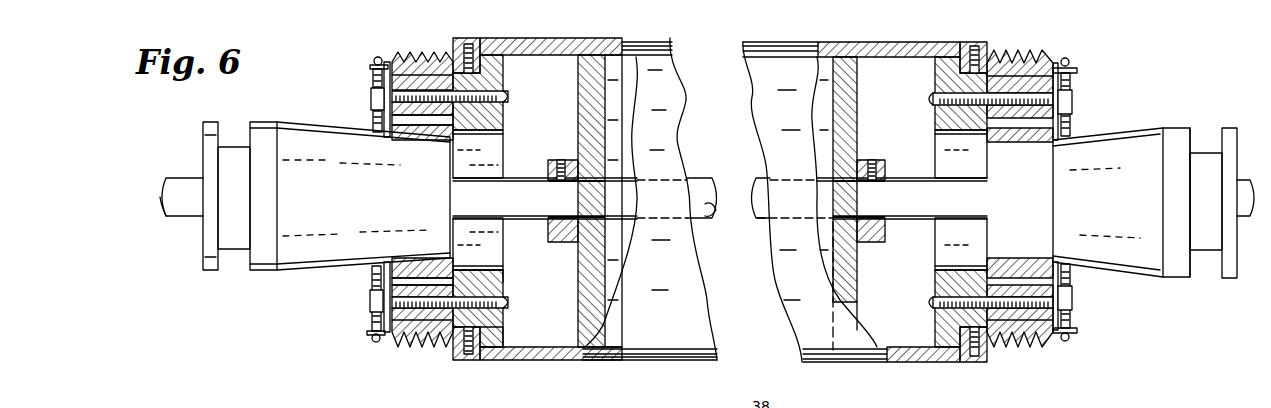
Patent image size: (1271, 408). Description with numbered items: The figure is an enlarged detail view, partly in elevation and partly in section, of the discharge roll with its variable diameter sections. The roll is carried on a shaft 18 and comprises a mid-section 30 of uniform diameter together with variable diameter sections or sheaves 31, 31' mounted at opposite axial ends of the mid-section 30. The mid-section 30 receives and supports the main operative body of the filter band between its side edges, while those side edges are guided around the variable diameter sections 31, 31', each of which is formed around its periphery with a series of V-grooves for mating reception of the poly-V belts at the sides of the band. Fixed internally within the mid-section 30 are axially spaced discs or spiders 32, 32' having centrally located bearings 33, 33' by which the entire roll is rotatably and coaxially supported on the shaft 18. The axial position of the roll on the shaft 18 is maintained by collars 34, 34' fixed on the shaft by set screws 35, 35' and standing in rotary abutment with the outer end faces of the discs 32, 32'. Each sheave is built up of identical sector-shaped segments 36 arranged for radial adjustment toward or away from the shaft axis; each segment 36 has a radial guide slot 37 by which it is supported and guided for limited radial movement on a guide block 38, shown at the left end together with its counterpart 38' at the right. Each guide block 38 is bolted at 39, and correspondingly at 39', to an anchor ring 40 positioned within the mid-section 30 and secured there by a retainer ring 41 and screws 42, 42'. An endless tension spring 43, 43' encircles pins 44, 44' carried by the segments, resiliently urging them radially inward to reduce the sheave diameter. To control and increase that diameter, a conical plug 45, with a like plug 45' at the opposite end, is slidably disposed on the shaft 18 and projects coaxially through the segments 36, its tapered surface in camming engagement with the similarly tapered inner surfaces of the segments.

The shaft 18 is at (178, 185).
The mid-section 30 is at (602, 38).
The variable diameter section 31 is at (411, 181).
The variable diameter section 31' is at (1028, 185).
The disc 32 is at (585, 201).
The disc 32' is at (854, 193).
The bearing 33 is at (603, 214).
The bearing 33' is at (860, 172).
The collar 34 is at (559, 245).
The collar 34' is at (879, 244).
The set screw 35 is at (559, 156).
The set screw 35' is at (884, 159).
The segment 36 is at (690, 407).
The radial guide slot 37 is at (408, 120).
The guide block 38 is at (472, 201).
The hub 38' is at (961, 202).
The bolt 39 is at (465, 198).
The bolt 39' is at (991, 200).
The anchor ring 40 is at (492, 286).
The retainer ring 41 is at (478, 352).
The screw 42 is at (473, 205).
The screw 42' is at (973, 202).
The tension spring 43 is at (360, 197).
The plate 43' is at (1055, 196).
The pin 44 is at (348, 202).
The retaining bolt 44' is at (1065, 199).
The conical plug 45 is at (326, 182).
The conical drum 45' is at (1145, 203).